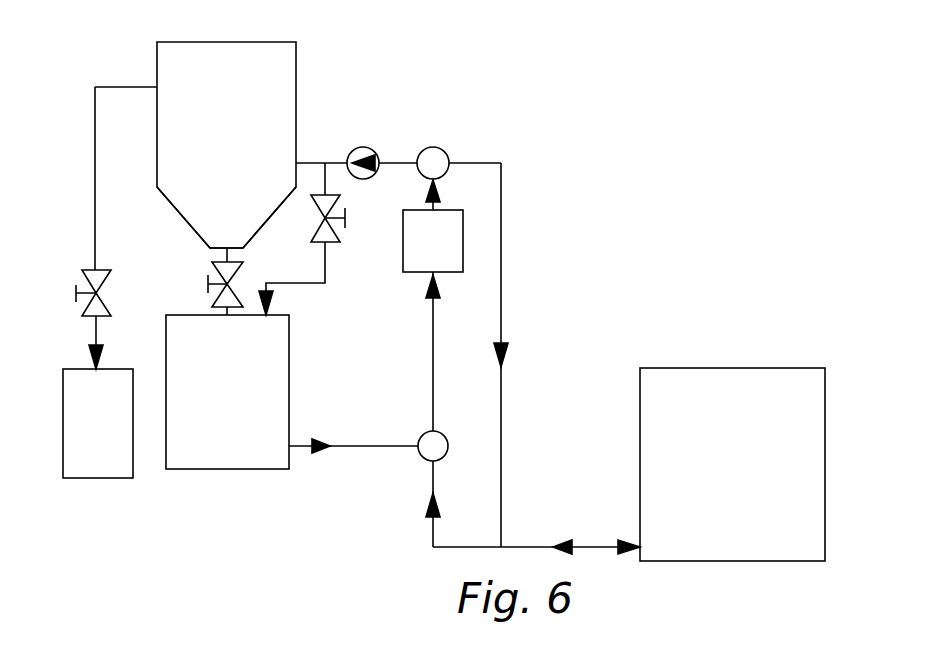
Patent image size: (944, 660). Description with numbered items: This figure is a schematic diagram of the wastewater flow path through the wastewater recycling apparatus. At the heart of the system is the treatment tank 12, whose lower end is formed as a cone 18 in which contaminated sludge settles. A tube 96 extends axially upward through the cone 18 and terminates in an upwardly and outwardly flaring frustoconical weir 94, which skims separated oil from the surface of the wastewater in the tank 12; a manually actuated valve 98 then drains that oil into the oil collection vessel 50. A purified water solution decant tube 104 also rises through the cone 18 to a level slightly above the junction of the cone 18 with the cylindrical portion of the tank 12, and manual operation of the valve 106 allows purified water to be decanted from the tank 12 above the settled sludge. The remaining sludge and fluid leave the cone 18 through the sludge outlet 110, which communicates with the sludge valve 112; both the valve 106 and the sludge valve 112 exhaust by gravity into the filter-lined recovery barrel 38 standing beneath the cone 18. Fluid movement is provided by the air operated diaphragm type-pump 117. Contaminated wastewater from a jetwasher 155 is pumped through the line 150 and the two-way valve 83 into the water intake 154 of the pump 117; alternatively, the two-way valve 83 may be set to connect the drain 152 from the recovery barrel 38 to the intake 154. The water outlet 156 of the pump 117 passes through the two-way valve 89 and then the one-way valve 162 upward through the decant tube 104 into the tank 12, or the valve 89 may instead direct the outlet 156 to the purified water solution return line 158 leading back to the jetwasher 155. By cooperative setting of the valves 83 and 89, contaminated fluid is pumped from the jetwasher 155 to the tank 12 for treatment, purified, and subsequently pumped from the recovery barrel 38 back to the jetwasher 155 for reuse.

The treatment tank 12 is at (221, 113).
The cone 18 is at (221, 217).
The recovery barrel 38 is at (202, 421).
The oil collection vessel 50 is at (88, 427).
The two-way valve 83 is at (421, 455).
The two-way valve 89 is at (441, 149).
The frustoconical weir 94 is at (153, 87).
The tube 96 is at (95, 128).
The valve 98 is at (82, 272).
The purified water solution decant tube 104 is at (310, 162).
The valve 106 is at (340, 243).
The sludge outlet 110 is at (212, 266).
The sludge valve 112 is at (212, 302).
The air operated diaphragm type-pump 117 is at (419, 250).
The line 150 is at (555, 548).
The drain 152 is at (350, 446).
The water intake 154 is at (433, 320).
The jetwasher 155 is at (728, 466).
The water outlet 156 is at (441, 180).
The purified water solution return line 158 is at (501, 240).
The one-way valve 162 is at (364, 147).